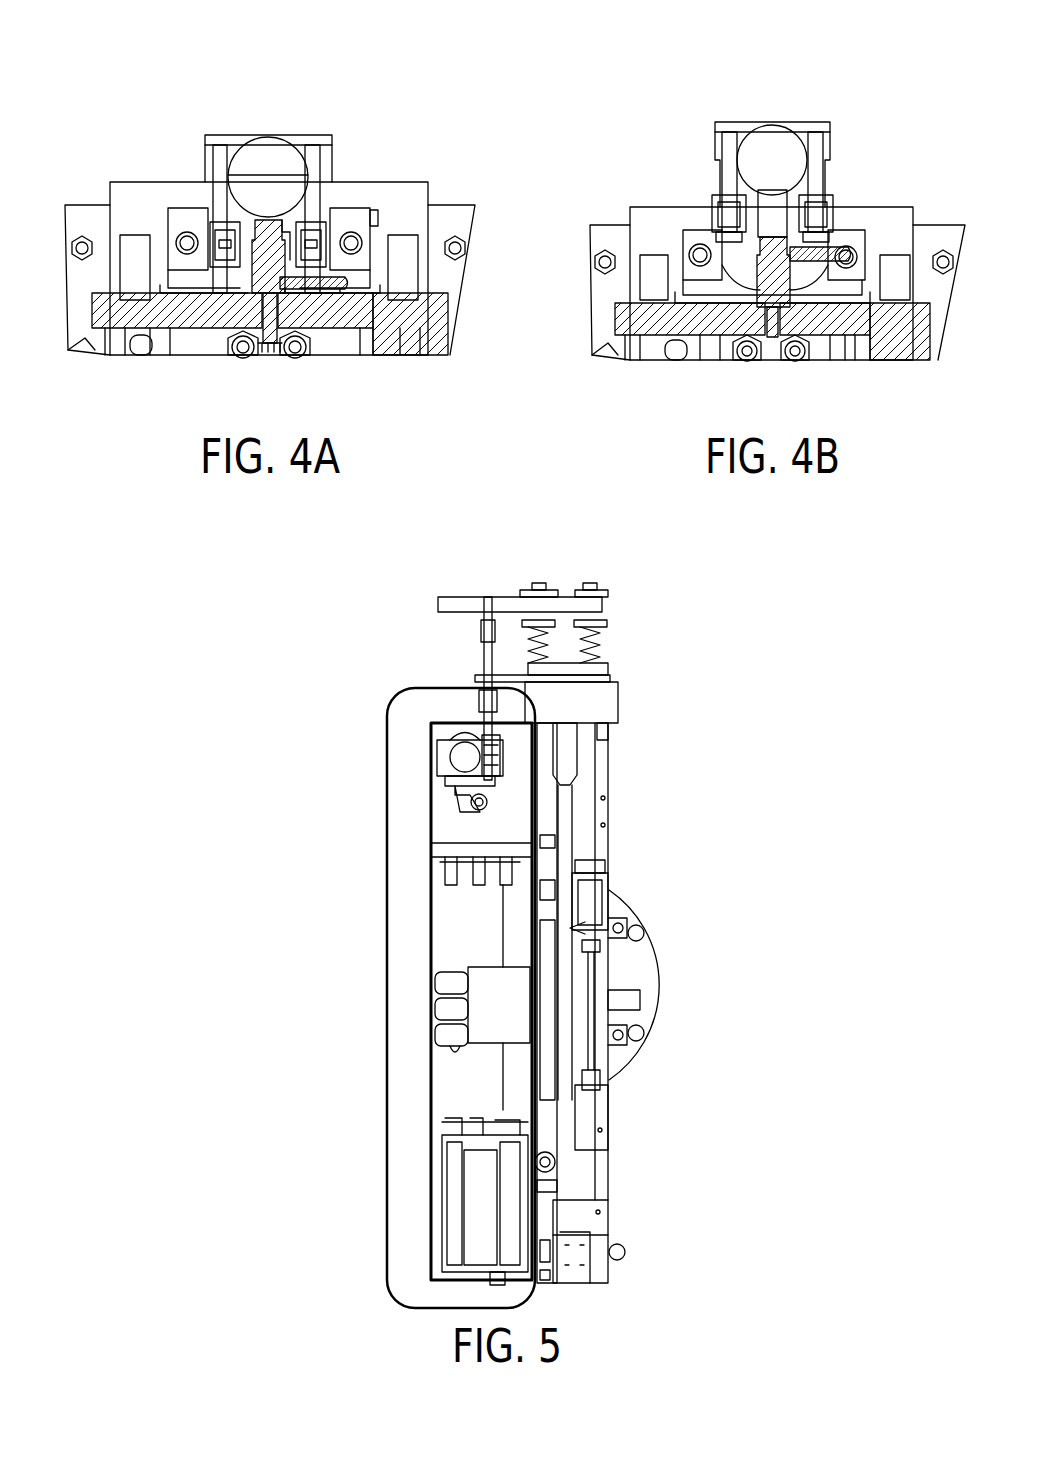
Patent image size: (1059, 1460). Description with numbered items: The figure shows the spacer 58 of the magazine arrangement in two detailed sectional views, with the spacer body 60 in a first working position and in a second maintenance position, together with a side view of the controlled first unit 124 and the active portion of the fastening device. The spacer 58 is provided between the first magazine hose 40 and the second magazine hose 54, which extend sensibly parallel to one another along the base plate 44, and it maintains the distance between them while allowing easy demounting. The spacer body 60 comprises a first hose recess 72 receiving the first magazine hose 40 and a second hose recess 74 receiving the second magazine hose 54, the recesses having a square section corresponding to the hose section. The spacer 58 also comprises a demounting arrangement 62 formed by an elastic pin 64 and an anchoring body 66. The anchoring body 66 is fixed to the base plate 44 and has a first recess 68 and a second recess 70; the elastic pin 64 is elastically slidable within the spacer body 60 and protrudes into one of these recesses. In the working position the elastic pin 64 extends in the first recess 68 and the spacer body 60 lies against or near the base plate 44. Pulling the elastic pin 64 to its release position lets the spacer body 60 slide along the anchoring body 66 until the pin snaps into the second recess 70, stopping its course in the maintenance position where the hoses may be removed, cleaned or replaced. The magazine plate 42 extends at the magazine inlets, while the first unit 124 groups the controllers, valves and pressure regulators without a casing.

In FIG. 4B, the first magazine hose 40 is at (718, 224).
In FIG. 5, the magazine plate 42 is at (597, 708).
In FIG. 5, the base plate 44 is at (566, 940).
In FIG. 4B, the second magazine hose 54 is at (826, 226).
In FIG. 4A, the spacer 58 is at (270, 243).
In FIG. 4B, the spacer 58 is at (777, 235).
In FIG. 5, the spacer 58 is at (630, 998).
In FIG. 4A, the spacer body 60 is at (325, 163).
In FIG. 4A, the demounting arrangement 62 is at (303, 322).
In FIG. 4A, the elastic pin 64 is at (350, 289).
In FIG. 4B, the elastic pin 64 is at (832, 260).
In FIG. 4A, the anchoring body 66 is at (243, 340).
In FIG. 4B, the anchoring body 66 is at (762, 312).
In FIG. 4A, the first recess 68 is at (262, 283).
In FIG. 4A, the second recess 70 is at (280, 222).
In FIG. 4B, the first hose recess 72 is at (720, 196).
In FIG. 4B, the second hose recess 74 is at (820, 196).
In FIG. 5, the first unit 124 is at (385, 808).